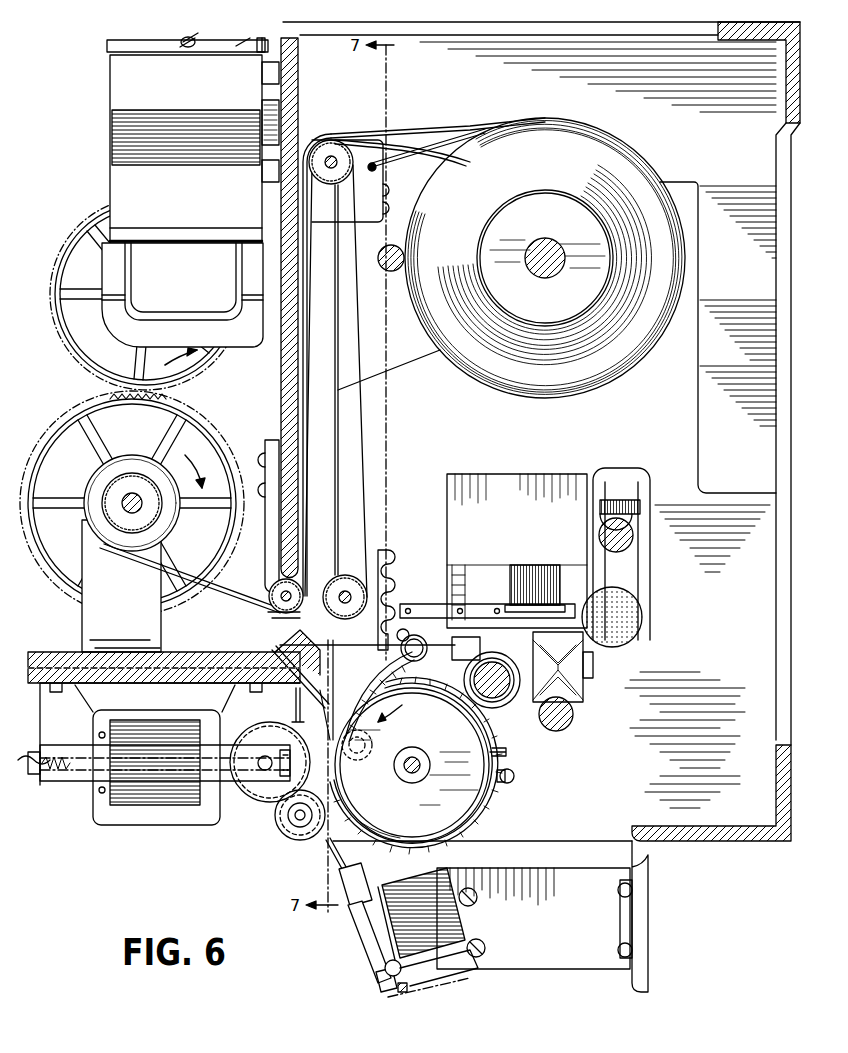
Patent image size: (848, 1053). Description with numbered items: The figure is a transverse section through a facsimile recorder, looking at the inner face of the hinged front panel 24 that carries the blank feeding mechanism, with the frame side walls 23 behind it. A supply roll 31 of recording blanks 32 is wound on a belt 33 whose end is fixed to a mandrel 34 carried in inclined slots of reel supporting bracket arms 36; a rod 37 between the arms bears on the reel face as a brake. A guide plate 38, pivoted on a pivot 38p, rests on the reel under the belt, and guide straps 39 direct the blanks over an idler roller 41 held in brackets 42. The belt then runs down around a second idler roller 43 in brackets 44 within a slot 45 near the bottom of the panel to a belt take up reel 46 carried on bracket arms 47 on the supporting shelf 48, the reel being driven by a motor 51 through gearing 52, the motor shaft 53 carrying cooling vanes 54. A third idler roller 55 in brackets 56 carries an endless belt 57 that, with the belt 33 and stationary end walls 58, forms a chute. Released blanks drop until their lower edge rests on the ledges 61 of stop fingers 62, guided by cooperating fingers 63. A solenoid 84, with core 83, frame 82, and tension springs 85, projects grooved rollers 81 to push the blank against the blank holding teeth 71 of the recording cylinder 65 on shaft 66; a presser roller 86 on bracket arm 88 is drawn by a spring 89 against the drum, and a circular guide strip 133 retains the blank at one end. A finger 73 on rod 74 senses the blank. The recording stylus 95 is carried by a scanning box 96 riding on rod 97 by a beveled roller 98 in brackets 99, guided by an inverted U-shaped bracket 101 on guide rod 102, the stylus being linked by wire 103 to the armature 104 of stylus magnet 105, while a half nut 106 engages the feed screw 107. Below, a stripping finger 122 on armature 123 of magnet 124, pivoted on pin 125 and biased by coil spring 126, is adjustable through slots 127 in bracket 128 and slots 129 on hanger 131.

The side walls 23 is at (548, 845).
The front panel 24 is at (282, 380).
The supply roll 31 is at (625, 172).
The blank 32 is at (300, 636).
The belt 33 is at (250, 598).
The mandrel 34 is at (545, 278).
The reel supporting bracket arms 36 is at (408, 356).
The rod 37 is at (391, 271).
The guide plate 38 is at (432, 150).
The pivot 38p is at (372, 162).
The guide straps 39 is at (424, 144).
The idler roller 41 is at (325, 172).
The brackets 42 is at (372, 198).
The second idler roller 43 is at (270, 590).
The brackets 44 is at (270, 440).
The slot 45 is at (290, 630).
The belt take up reel 46 is at (128, 455).
The bracket arms 47 is at (82, 615).
The supporting shelf 48 is at (48, 655).
The motor 51 is at (123, 94).
The gearing 52 is at (58, 410).
The motor shaft 53 is at (192, 38).
The vanes 54 is at (254, 38).
The third idler roller 55 is at (352, 617).
The brackets 56 is at (386, 560).
The endless belt 57 is at (363, 413).
The end walls 58 is at (350, 420).
The ledges 61 is at (346, 785).
The stop fingers 62 is at (296, 712).
The cooperating fingers 63 is at (312, 672).
The recording cylinder 65 is at (383, 836).
The shaft 66 is at (432, 762).
The blank holding teeth 71 is at (485, 813).
The finger 73 is at (398, 692).
The rod 74 is at (427, 646).
The grooved rollers 81 is at (252, 795).
The frame 82 is at (228, 745).
The core 83 is at (66, 745).
The solenoid 84 is at (150, 790).
The tension springs 85 is at (60, 770).
The presser roller 86 is at (278, 845).
The bracket arm 88 is at (318, 740).
The spring 89 is at (508, 784).
The recording stylus 95 is at (372, 690).
The scanning box 96 is at (508, 487).
The rod 97 is at (560, 730).
The beveled roller 98 is at (583, 690).
The brackets 99 is at (593, 670).
The inverted U-shaped bracket 101 is at (640, 585).
The guide rod 102 is at (634, 535).
The wire 103 is at (409, 634).
The armature 104 is at (422, 604).
The stylus magnet 105 is at (508, 585).
The half nut 106 is at (452, 652).
The feed screw 107 is at (500, 700).
The stripping finger 122 is at (330, 858).
The armature 123 is at (366, 940).
The magnet 124 is at (395, 878).
The pin 125 is at (372, 978).
The coil spring 126 is at (405, 992).
The slots 127 is at (478, 905).
The bracket 128 is at (560, 965).
The slots 129 is at (620, 917).
The hanger 131 is at (650, 913).
The circular guide strip 133 is at (506, 752).